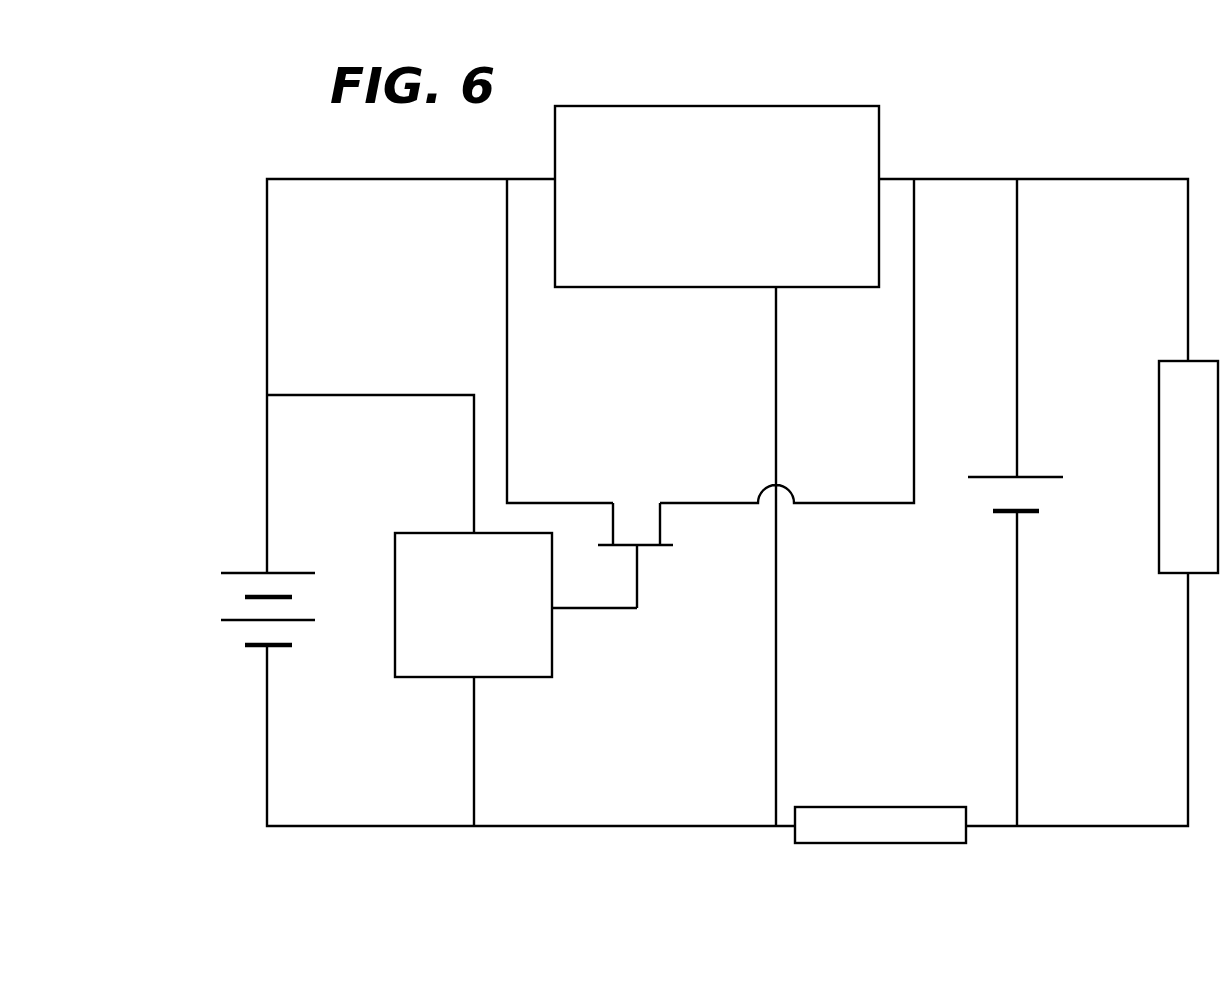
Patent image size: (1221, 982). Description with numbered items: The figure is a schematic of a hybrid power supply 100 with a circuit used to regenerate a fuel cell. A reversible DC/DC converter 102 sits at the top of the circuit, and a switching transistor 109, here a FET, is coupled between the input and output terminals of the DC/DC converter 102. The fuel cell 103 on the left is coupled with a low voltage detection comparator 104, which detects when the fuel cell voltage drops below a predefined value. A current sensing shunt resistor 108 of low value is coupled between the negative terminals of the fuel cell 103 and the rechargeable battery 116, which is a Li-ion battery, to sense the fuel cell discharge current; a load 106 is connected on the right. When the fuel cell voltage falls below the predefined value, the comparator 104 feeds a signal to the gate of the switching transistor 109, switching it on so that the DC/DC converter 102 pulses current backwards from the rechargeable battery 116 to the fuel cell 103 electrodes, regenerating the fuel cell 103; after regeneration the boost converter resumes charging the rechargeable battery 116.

The hybrid power supply 100 is at (542, 855).
The reversible DC/DC converter 102 is at (677, 268).
The fuel cell 103 is at (302, 574).
The low voltage detection comparator 104 is at (428, 662).
The load 106 is at (1175, 531).
The current sensing shunt resistor 108 is at (882, 815).
The switching transistor 109 is at (630, 508).
The rechargeable battery 116 is at (887, 667).